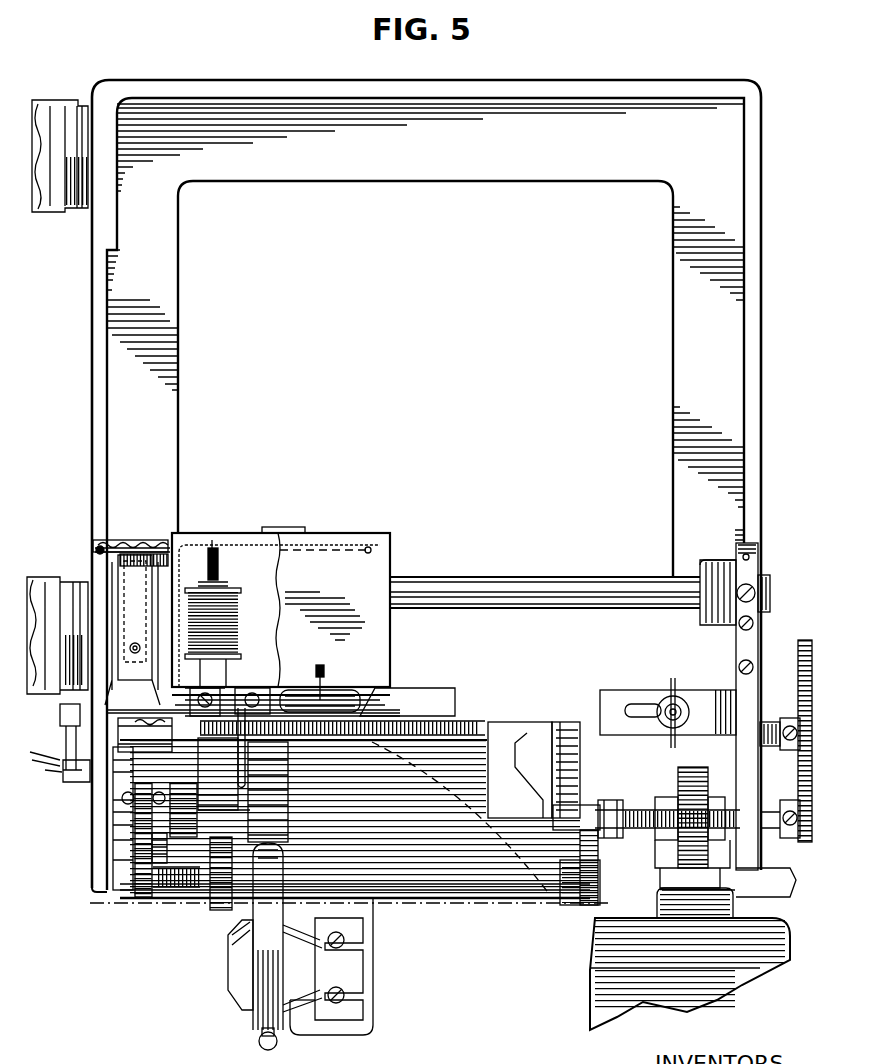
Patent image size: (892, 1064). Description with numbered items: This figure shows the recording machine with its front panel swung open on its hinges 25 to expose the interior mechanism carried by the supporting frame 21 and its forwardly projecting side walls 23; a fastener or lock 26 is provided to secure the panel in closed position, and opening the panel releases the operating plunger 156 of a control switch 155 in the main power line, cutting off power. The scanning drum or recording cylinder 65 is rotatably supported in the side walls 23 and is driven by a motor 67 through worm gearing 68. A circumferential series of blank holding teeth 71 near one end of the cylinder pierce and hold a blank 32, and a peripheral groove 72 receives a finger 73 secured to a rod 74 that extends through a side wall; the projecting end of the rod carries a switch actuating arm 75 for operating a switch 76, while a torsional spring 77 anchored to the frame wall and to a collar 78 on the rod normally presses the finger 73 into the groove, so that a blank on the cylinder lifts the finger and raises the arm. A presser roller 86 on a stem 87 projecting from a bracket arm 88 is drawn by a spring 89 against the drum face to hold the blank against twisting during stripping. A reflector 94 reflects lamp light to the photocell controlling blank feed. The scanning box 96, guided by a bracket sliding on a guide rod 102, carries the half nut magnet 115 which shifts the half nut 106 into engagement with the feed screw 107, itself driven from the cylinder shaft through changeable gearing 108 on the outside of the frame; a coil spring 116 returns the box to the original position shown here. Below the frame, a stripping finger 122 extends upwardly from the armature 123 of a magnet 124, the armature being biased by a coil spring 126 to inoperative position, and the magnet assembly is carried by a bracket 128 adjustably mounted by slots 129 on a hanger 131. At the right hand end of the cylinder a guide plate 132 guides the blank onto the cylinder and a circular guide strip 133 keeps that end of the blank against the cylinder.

The supporting frame 21 is at (440, 88).
The side walls 23 is at (750, 475).
The hinges 25 is at (56, 205).
The fastener or lock 26 is at (661, 717).
The blank 32 is at (446, 900).
The scanning drum or recording cylinder 65 is at (420, 892).
The motor 67 is at (738, 982).
The worm gearing 68 is at (676, 792).
The blank holding teeth 71 is at (292, 768).
The peripheral groove 72 is at (245, 793).
The finger 73 is at (238, 768).
The rod 74 is at (230, 738).
The switch actuating arm 75 is at (66, 736).
The switch 76 is at (62, 774).
The torsional spring 77 is at (147, 718).
The collar 78 is at (222, 692).
The presser roller 86 is at (222, 900).
The stem 87 is at (180, 888).
The bracket arm 88 is at (143, 898).
The spring 89 is at (152, 846).
The reflector 94 is at (510, 732).
The scanning box 96 is at (383, 574).
The guide rod 102 is at (460, 580).
The half nut 106 is at (320, 690).
The feed screw 107 is at (400, 722).
The gearing 108 is at (802, 793).
The half nut magnet 115 is at (232, 630).
The coil spring 116 is at (140, 547).
The stripping finger 122 is at (283, 886).
The armature 123 is at (260, 1018).
The magnet 124 is at (240, 964).
The coil spring 126 is at (279, 1043).
The bracket 128 is at (360, 968).
The slots 129 is at (345, 958).
The hanger 131 is at (368, 1026).
The guide plate 132 is at (555, 732).
The circular guide strip 133 is at (562, 905).
The control switch 155 is at (156, 548).
The operating plunger 156 is at (135, 643).